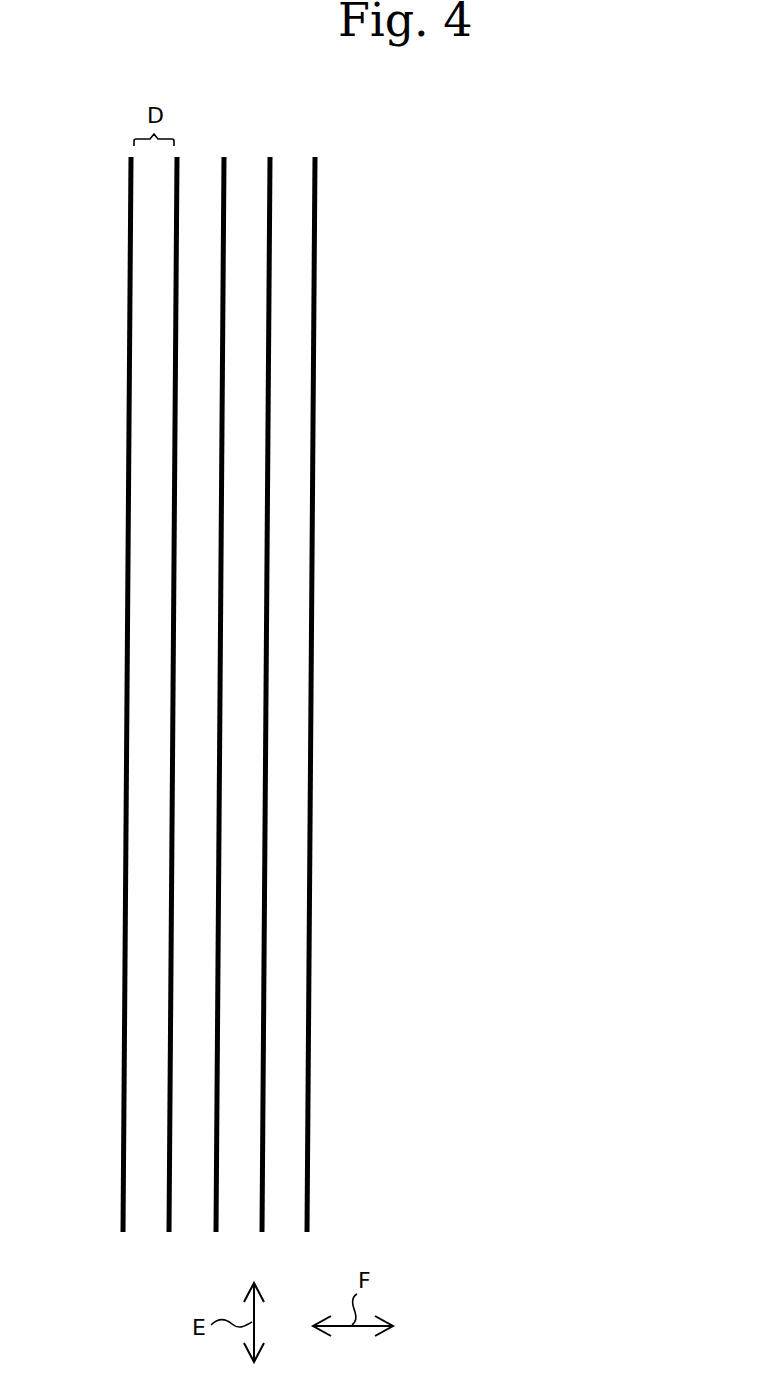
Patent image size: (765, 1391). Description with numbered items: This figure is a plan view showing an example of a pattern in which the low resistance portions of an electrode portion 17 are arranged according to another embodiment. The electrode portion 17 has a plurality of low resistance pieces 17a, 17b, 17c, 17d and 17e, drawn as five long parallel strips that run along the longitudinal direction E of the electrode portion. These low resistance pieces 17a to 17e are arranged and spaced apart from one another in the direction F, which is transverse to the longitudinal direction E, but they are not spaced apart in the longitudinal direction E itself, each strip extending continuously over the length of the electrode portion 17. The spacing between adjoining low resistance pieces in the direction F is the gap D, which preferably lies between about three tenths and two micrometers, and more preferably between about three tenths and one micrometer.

The electrode portion 17 is at (234, 656).
The low resistance piece 17a is at (128, 480).
The low resistance piece 17b is at (174, 373).
The low resistance piece 17c is at (225, 410).
The low resistance piece 17d is at (270, 478).
The low resistance piece 17e is at (315, 527).